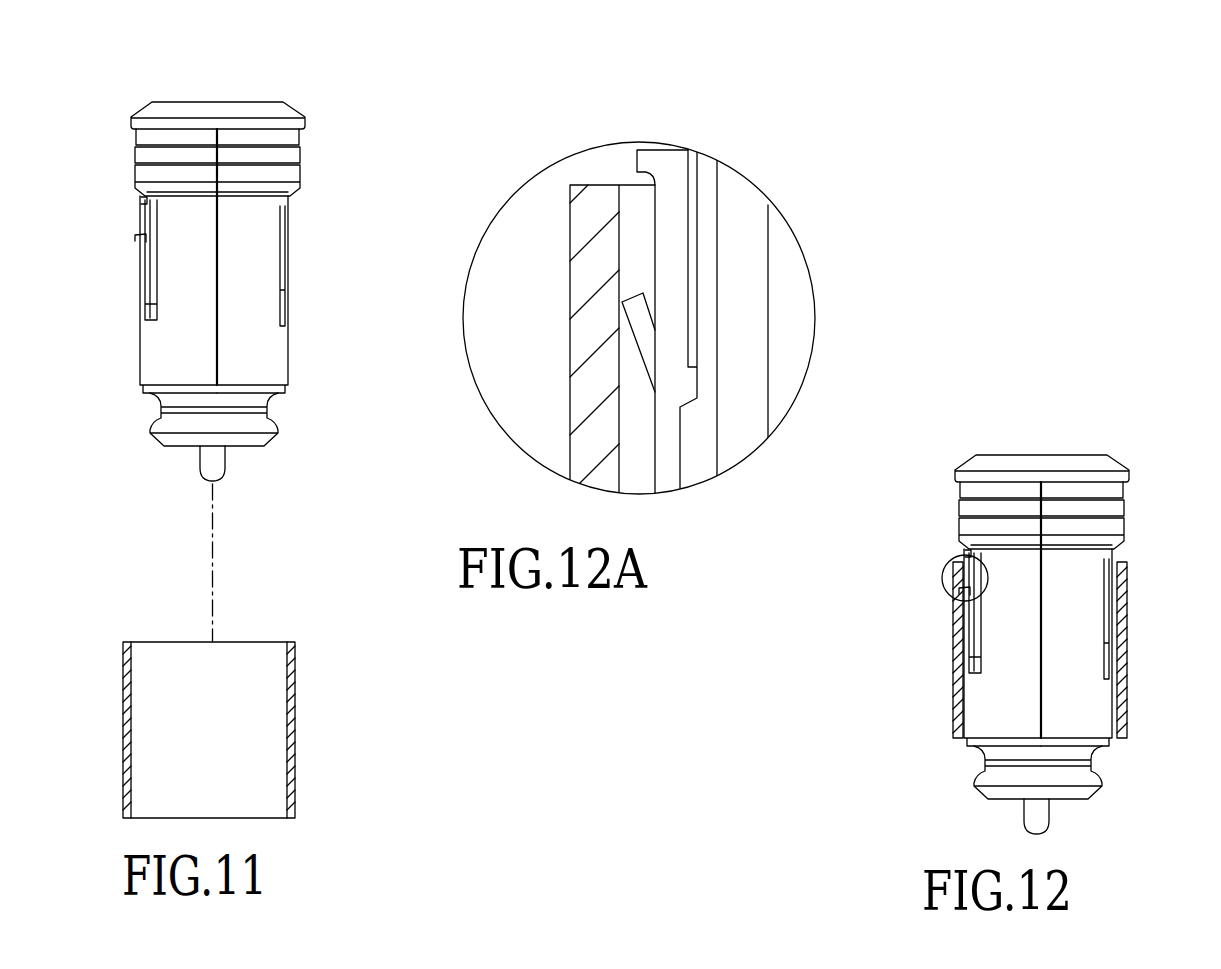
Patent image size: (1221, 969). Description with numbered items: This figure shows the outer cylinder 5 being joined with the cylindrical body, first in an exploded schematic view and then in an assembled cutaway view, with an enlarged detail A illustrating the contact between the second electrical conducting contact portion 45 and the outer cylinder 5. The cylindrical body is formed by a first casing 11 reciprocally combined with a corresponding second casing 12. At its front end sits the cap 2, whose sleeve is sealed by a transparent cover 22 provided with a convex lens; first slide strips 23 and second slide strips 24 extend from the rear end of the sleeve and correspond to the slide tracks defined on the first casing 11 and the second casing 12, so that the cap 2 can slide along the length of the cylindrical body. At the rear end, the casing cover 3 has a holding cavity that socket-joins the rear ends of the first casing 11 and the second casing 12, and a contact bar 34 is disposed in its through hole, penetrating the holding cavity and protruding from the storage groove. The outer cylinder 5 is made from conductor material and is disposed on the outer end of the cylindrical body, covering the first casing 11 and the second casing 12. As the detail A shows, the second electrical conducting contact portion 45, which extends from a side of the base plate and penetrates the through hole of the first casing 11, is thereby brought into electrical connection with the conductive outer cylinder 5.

In FIG. 11, the cap 2 is at (298, 103).
In FIG. 12, the cap 2 is at (1123, 457).
In FIG. 11, the transparent cover 22 is at (200, 108).
In FIG. 12, the transparent cover 22 is at (1024, 461).
In FIG. 11, the first casing 11 is at (166, 352).
In FIG. 12, the first casing 11 is at (992, 703).
In FIG. 11, the second casing 12 is at (264, 351).
In FIG. 12, the second casing 12 is at (1088, 705).
In FIG. 11, the first slide strips 23 is at (153, 302).
In FIG. 12, the first slide strips 23 is at (977, 657).
In FIG. 11, the second slide strips 24 is at (286, 278).
In FIG. 12, the second slide strips 24 is at (1114, 637).
In FIG. 11, the second electrical conducting contact portion 45 is at (141, 241).
In FIG. 12A, the second electrical conducting contact portion 45 is at (640, 315).
In FIG. 11, the casing cover 3 is at (158, 407).
In FIG. 12, the casing cover 3 is at (982, 760).
In FIG. 11, the contact bar 34 is at (222, 453).
In FIG. 12, the contact bar 34 is at (1047, 815).
In FIG. 11, the outer cylinder 5 is at (126, 710).
In FIG. 12A, the outer cylinder 5 is at (590, 348).
In FIG. 12, the detail A is at (946, 574).